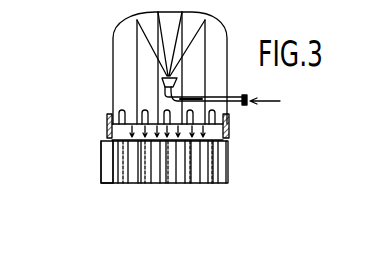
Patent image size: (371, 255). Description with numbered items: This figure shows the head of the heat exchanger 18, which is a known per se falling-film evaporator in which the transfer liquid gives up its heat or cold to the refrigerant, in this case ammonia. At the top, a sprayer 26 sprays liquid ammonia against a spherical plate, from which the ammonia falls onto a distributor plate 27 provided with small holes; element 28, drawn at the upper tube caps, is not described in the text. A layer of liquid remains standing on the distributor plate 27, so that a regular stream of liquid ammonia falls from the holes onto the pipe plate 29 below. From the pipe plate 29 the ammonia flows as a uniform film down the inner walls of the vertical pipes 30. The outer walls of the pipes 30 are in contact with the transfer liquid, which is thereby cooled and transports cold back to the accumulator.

The heat exchanger 18 is at (231, 166).
The sprayer 26 is at (178, 80).
The distributor plate 27 is at (107, 125).
The tube caps 28 is at (120, 114).
The pipe plate 29 is at (103, 142).
The pipes 30 is at (118, 167).